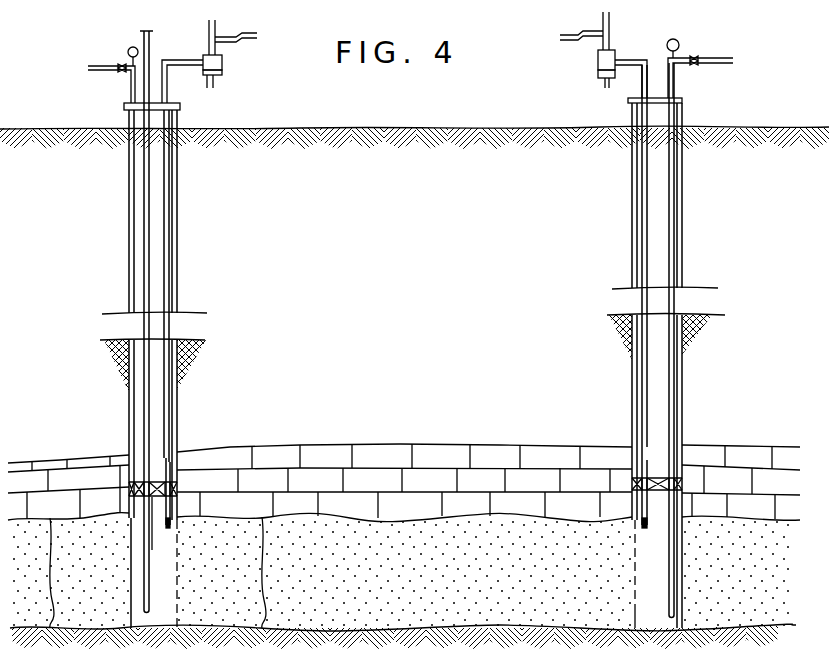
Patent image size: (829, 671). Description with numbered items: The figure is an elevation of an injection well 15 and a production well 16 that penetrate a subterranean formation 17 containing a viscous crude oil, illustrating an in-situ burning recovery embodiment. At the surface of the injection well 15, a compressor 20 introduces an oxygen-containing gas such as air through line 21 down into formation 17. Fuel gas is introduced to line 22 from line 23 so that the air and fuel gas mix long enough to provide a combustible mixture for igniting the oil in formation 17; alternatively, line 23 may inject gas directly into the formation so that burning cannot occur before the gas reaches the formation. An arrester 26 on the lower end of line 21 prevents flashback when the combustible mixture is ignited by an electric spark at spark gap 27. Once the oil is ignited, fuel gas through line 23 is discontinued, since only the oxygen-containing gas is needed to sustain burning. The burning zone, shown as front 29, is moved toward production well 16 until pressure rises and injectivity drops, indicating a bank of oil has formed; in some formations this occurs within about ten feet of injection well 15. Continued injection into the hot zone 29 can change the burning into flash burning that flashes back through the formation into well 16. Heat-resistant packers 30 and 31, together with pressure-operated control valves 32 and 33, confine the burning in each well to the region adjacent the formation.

The injection well 15 is at (130, 238).
The production well 16 is at (632, 235).
The subterranean formation 17 is at (412, 572).
The compressor 20 is at (222, 66).
The line 21 is at (182, 66).
The line 22 is at (209, 32).
The line 23 is at (257, 35).
The arrester 26 is at (171, 522).
The spark gap 27 is at (153, 552).
The front 29 is at (51, 567).
The heat-resistant packer 30 is at (130, 489).
The heat-resistant packer 31 is at (632, 484).
The pressure-operated control valve 32 is at (170, 459).
The pressure-operated control valve 33 is at (645, 458).